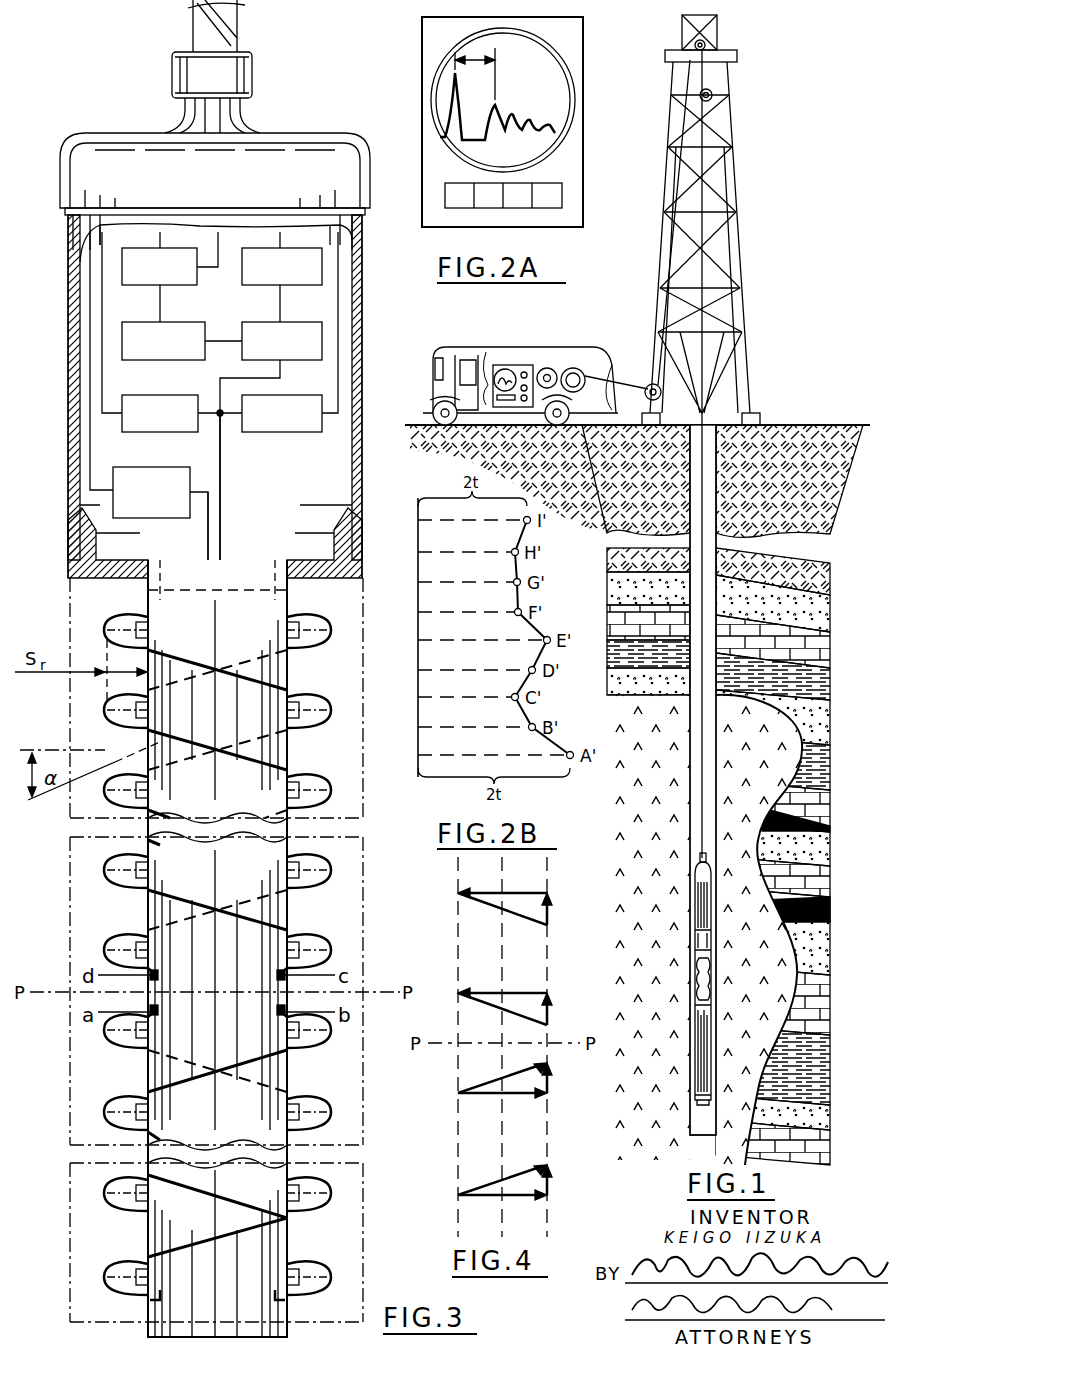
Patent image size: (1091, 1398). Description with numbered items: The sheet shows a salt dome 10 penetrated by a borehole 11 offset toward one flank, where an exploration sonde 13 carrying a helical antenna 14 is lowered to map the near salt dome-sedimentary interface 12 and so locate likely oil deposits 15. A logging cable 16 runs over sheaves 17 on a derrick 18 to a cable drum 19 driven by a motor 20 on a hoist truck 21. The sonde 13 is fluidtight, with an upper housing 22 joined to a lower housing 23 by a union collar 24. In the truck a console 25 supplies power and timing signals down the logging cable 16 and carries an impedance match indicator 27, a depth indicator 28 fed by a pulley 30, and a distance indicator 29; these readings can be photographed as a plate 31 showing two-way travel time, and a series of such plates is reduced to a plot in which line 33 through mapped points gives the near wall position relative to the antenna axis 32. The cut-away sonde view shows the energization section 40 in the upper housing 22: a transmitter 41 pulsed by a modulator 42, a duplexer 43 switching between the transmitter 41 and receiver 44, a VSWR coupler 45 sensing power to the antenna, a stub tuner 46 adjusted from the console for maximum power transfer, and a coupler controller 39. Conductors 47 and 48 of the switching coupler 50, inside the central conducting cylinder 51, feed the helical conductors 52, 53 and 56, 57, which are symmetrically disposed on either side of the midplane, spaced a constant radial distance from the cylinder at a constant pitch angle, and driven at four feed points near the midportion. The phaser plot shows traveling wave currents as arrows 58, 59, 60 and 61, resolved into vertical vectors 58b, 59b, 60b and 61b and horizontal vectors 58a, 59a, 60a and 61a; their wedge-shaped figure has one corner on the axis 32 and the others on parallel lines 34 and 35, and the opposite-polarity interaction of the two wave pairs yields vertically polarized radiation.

In FIG. 1, the salt dome 10 is at (775, 764).
In FIG. 1, the borehole 11 is at (690, 778).
In FIG. 1, the salt dome-sedimentary interface 12 is at (785, 1005).
In FIG. 3, the exploration sonde 13 is at (297, 133).
In FIG. 1, the exploration sonde 13 is at (693, 866).
In FIG. 3, the helical antenna 14 is at (318, 752).
In FIG. 1, the helical antenna 14 is at (713, 990).
In FIG. 1, the oil deposits 15 is at (795, 826).
In FIG. 3, the logging cable 16 is at (193, 35).
In FIG. 1, the logging cable 16 is at (700, 740).
In FIG. 1, the sheaves 17 is at (735, 63).
In FIG. 1, the derrick 18 is at (735, 182).
In FIG. 1, the cable drum 19 is at (552, 374).
In FIG. 1, the motor 20 is at (548, 377).
In FIG. 1, the hoist truck 21 is at (452, 349).
In FIG. 3, the upper housing 22 is at (68, 370).
In FIG. 1, the upper housing 22 is at (698, 905).
In FIG. 1, the lower housing 23 is at (698, 1063).
In FIG. 1, the union collar 24 is at (698, 945).
In FIG. 1, the console 25 is at (513, 363).
In FIG. 1, the impedance match indicator 27 is at (527, 371).
In FIG. 1, the depth indicator 28 is at (505, 400).
In FIG. 1, the distance indicator 29 is at (502, 368).
In FIG. 1, the pulley 30 is at (582, 376).
In FIG. 2A, the photographic plate 31 is at (422, 57).
In FIG. 2B, the antenna axis 32 is at (418, 630).
In FIG. 4, the antenna axis 32 is at (502, 1137).
In FIG. 2B, the line connecting mapped points 33 is at (550, 636).
In FIG. 4, the parallel line 34 is at (458, 1222).
In FIG. 4, the parallel line 35 is at (547, 1135).
In FIG. 3, the coupler controller 39 is at (128, 467).
In FIG. 3, the energization section 40 is at (318, 493).
In FIG. 3, the transmitter 41 is at (152, 360).
In FIG. 3, the modulator 42 is at (185, 285).
In FIG. 3, the duplexer 43 is at (292, 360).
In FIG. 3, the receiver 44 is at (262, 287).
In FIG. 3, the VSWR coupler 45 is at (158, 432).
In FIG. 3, the stub tuner 46 is at (285, 432).
In FIG. 3, the electrical conductor 47 is at (208, 535).
In FIG. 3, the input/output conductor 48 is at (222, 505).
In FIG. 3, the switching coupler 50 is at (256, 801).
In FIG. 3, the central conducting cylinder 51 is at (292, 680).
In FIG. 3, the helical conductor 52 is at (118, 1055).
In FIG. 3, the helical conductor 53 is at (318, 1055).
In FIG. 3, the helical conductor 56 is at (322, 940).
In FIG. 3, the helical conductor 57 is at (118, 940).
In FIG. 4, the current phaser arrow 58 is at (487, 906).
In FIG. 4, the horizontal vector 58a is at (513, 893).
In FIG. 4, the vertical vector 58b is at (547, 915).
In FIG. 4, the current phaser arrow 59 is at (487, 1006).
In FIG. 4, the horizontal vector 59a is at (520, 993).
In FIG. 4, the vertical vector 59b is at (547, 1012).
In FIG. 4, the current phaser arrow 60 is at (485, 1083).
In FIG. 4, the horizontal vector 60a is at (515, 1096).
In FIG. 4, the vertical vector 60b is at (547, 1083).
In FIG. 4, the current phaser arrow 61 is at (485, 1185).
In FIG. 4, the horizontal vector 61a is at (515, 1198).
In FIG. 4, the vertical vector 61b is at (547, 1185).